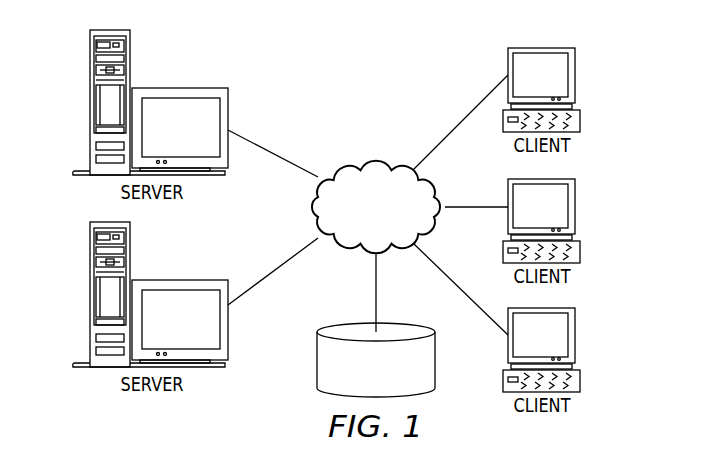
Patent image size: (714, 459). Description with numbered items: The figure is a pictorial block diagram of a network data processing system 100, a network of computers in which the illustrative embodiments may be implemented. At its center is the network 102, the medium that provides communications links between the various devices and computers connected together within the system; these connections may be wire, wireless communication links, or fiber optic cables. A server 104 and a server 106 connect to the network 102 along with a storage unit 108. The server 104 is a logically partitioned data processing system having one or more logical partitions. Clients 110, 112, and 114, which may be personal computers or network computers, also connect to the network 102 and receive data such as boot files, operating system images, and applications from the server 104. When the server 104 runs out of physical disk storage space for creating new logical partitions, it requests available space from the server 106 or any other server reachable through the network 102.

The network data processing system 100 is at (425, 65).
The network 102 is at (348, 160).
The server 104 is at (90, 105).
The server 106 is at (90, 297).
The storage unit 108 is at (317, 371).
The client 110 is at (576, 77).
The client 112 is at (576, 208).
The client 114 is at (576, 337).